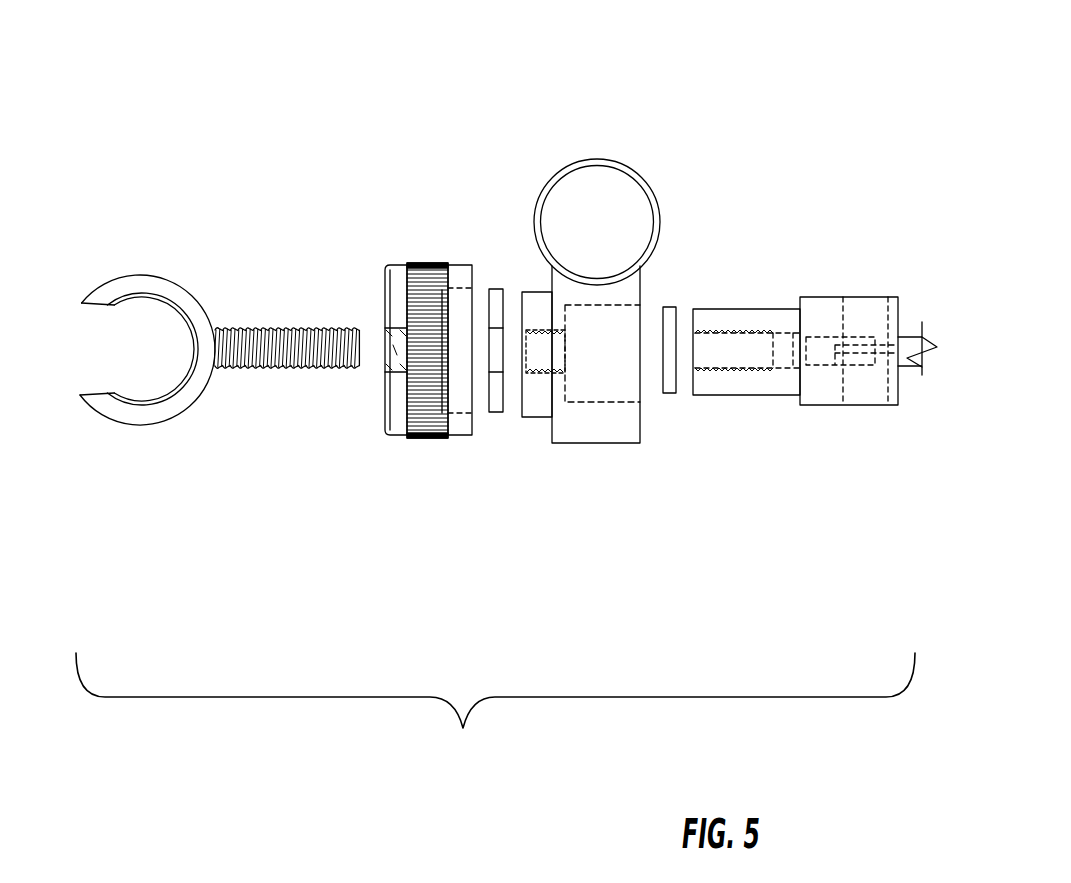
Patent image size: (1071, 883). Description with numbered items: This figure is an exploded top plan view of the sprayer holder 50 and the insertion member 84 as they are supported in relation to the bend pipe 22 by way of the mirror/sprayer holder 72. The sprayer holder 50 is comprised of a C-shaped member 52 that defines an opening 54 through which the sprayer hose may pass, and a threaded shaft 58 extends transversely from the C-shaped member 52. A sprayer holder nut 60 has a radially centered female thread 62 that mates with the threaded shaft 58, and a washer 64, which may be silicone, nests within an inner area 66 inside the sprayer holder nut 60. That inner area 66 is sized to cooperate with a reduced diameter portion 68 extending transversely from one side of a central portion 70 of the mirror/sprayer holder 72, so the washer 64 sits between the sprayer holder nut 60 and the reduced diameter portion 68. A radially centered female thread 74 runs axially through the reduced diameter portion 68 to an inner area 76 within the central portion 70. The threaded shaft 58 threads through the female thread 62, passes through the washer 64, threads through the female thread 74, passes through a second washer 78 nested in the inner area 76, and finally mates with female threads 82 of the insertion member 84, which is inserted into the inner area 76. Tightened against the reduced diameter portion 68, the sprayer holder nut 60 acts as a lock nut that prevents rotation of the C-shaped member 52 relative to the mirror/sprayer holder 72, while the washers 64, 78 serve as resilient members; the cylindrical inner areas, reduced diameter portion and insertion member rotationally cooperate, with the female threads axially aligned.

The bend pipe 22 is at (588, 158).
The sprayer holder 50 is at (292, 472).
The C-shaped member 52 is at (176, 424).
The opening 54 is at (93, 362).
The threaded shaft 58 is at (270, 328).
The sprayer holder nut 60 is at (418, 263).
The female thread 62 is at (386, 382).
The washer 64 is at (497, 413).
The inner area 66 is at (457, 300).
The reduced diameter portion 68 is at (542, 418).
The central portion 70 is at (640, 280).
The mirror/sprayer holder 72 is at (615, 527).
The female thread 74 is at (540, 378).
The inner area 76 is at (628, 403).
The washer 78 is at (670, 307).
The female threads 82 is at (727, 371).
The insertion member 84 is at (762, 309).